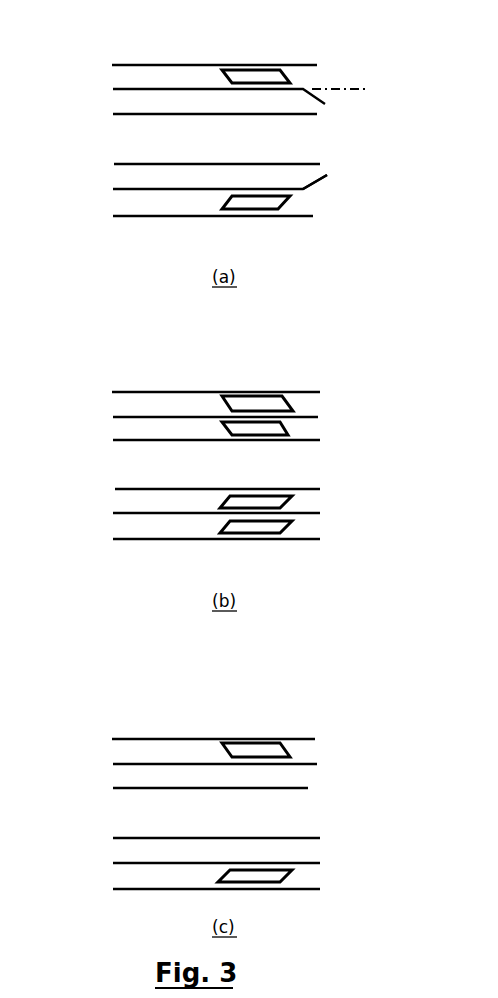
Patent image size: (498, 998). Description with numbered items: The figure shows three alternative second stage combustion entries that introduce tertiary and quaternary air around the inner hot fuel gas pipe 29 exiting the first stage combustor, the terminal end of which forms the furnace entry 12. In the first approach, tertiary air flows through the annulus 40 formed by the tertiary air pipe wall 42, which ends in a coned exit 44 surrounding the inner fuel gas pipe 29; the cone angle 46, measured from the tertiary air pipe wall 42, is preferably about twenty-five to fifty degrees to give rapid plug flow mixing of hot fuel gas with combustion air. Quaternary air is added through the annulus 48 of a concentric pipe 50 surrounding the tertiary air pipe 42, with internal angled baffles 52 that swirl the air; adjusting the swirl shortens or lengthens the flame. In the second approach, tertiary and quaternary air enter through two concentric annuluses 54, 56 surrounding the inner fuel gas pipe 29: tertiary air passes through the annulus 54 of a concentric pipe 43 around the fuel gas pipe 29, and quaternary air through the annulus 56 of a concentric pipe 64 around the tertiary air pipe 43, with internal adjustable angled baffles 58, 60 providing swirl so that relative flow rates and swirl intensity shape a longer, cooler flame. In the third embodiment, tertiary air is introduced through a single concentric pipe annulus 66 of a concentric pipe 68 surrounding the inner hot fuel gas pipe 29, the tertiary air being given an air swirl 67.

The furnace entry 12 is at (313, 114).
The inner fuel gas pipe 29 is at (172, 113).
The annulus 40 is at (123, 98).
The tertiary air pipe wall 42 is at (130, 89).
The concentric pipe 43 is at (127, 415).
The coned exit 44 is at (320, 188).
The cone angle 46 is at (325, 100).
The annulus 48 is at (118, 205).
The concentric pipe 50 is at (153, 63).
The internal angled baffles 52 is at (245, 73).
The annulus 54 is at (120, 427).
The annulus 56 is at (138, 399).
The internal adjustable angled baffles 58 is at (277, 427).
The internal adjustable angled baffles 60 is at (252, 405).
The concentric pipe 64 is at (155, 390).
The concentric pipe annulus 66 is at (152, 878).
The air swirl 67 is at (245, 747).
The concentric pipe 68 is at (275, 892).